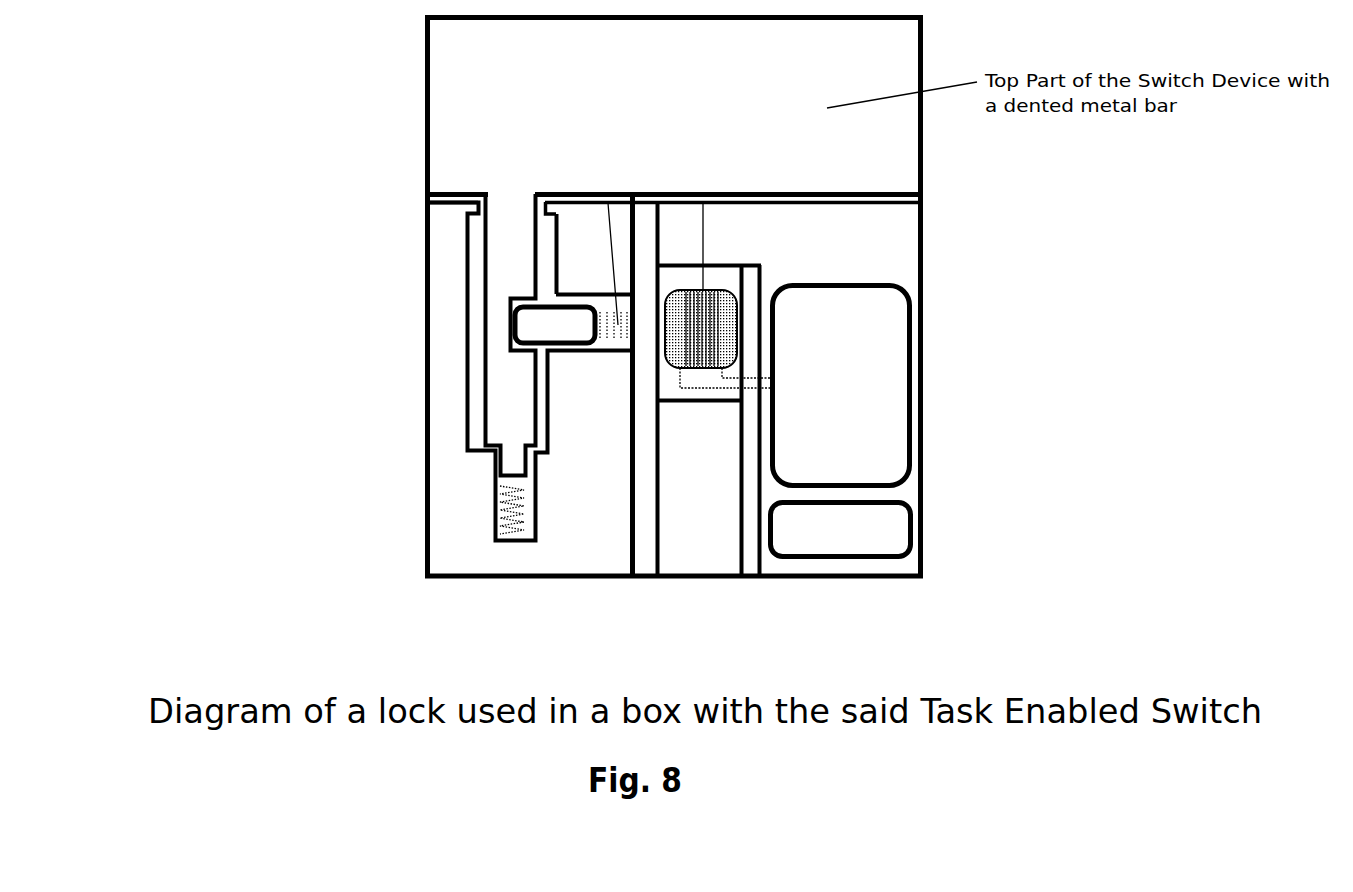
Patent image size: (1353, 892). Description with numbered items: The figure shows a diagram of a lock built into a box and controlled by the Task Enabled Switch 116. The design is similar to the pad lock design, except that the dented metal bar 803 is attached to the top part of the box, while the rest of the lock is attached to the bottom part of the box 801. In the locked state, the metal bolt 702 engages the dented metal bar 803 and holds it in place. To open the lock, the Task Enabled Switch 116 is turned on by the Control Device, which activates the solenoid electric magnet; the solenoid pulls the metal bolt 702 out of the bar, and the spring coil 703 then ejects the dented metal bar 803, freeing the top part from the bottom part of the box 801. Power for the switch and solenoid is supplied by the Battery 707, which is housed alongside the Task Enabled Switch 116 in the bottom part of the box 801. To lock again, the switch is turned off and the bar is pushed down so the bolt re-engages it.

The bottom part of the box 801 is at (888, 247).
The dented metal bar 803 is at (515, 252).
The metal bolt 702 is at (560, 327).
The spring coil 703 is at (493, 508).
The Task Enabled Switch 116 is at (845, 420).
The Battery 707 is at (840, 523).